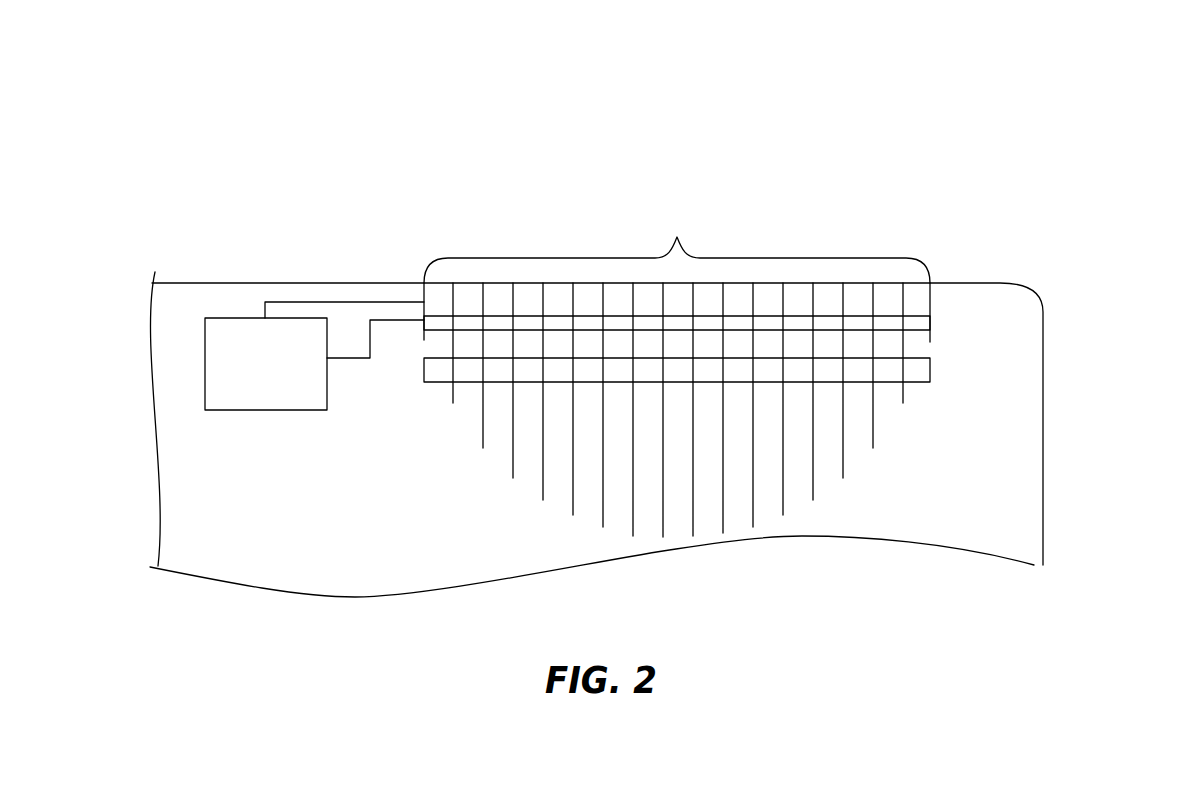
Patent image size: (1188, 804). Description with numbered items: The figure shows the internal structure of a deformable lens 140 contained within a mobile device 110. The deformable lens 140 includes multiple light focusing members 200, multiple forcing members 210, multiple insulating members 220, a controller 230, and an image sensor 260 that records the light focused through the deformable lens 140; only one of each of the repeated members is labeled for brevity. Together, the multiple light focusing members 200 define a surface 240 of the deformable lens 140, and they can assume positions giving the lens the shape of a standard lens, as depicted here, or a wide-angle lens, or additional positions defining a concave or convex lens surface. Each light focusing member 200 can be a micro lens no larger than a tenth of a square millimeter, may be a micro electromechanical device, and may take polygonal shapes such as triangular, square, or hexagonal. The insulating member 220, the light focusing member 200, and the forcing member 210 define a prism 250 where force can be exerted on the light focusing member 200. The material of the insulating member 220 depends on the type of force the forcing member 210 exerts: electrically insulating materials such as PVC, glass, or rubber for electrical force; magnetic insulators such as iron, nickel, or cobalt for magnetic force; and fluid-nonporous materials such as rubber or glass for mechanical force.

The mobile device 110 is at (1043, 373).
The deformable lens 140 is at (957, 132).
The light focusing member 200 is at (713, 368).
The forcing member 210 is at (463, 322).
The insulating member 220 is at (472, 302).
The controller 230 is at (248, 373).
The surface 240 is at (677, 237).
The prism 250 is at (478, 294).
The image sensor 260 is at (932, 378).